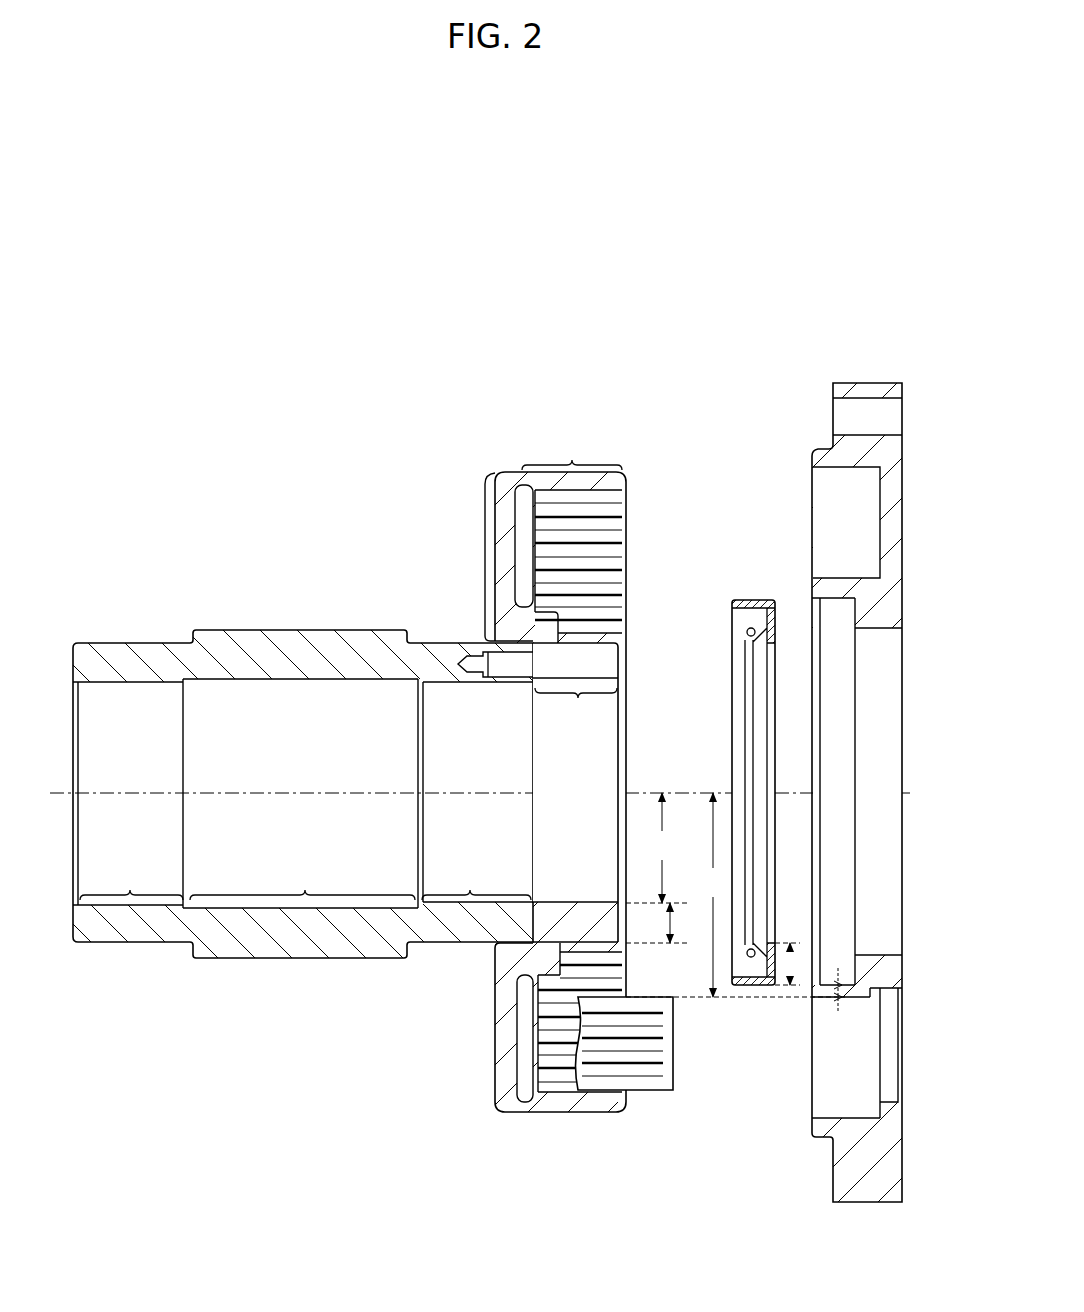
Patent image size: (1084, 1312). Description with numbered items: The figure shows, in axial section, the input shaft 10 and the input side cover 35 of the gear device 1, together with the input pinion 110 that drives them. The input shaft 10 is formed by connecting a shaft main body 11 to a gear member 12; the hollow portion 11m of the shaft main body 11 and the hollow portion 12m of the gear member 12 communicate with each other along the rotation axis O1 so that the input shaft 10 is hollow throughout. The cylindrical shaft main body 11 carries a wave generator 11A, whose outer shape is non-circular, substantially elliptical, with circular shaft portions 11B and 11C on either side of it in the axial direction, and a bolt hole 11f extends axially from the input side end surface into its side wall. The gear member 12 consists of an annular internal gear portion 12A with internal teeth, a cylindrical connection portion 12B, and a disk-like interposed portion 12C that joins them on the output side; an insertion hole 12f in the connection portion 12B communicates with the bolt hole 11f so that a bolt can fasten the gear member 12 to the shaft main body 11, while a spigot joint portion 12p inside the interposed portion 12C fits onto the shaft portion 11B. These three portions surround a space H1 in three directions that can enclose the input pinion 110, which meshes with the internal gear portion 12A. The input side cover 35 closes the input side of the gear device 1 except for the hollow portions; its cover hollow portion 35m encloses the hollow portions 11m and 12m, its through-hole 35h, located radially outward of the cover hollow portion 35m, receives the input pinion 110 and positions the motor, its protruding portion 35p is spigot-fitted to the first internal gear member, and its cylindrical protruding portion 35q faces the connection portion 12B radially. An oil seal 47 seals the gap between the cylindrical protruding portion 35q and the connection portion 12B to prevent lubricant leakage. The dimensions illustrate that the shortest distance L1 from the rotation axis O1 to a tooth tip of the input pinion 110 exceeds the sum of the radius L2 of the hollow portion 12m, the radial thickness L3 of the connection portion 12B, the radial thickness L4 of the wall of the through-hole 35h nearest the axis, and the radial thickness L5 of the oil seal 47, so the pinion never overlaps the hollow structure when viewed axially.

The gear device 1 is at (690, 260).
The input shaft 10 is at (243, 535).
The shaft main body 11 is at (299, 810).
The wave generator 11A is at (302, 879).
The shaft portion 11B is at (476, 879).
The shaft portion 11C is at (131, 879).
The hollow portion 11m is at (130, 705).
The bolt hole 11f is at (497, 669).
The gear member 12 is at (541, 787).
The internal gear portion 12A is at (571, 460).
The connection portion 12B is at (578, 700).
The interposed portion 12C is at (485, 556).
The insertion hole 12f is at (607, 668).
The hollow portion 12m is at (607, 781).
The spigot joint portion 12p is at (503, 637).
The oil seal 47 is at (753, 598).
The input side cover 35 is at (865, 764).
The protruding portion 35p is at (822, 458).
The cylindrical protruding portion 35q is at (827, 594).
The cover hollow portion 35m is at (890, 905).
The through-hole 35h is at (888, 1056).
The input pinion 110 is at (655, 1078).
The space H1 is at (607, 987).
The shortest distance L1 is at (714, 895).
The radius L2 is at (662, 848).
The thickness L3 is at (686, 923).
The thickness L4 is at (832, 996).
The thickness L5 is at (792, 964).
The rotation axis O1 is at (500, 794).